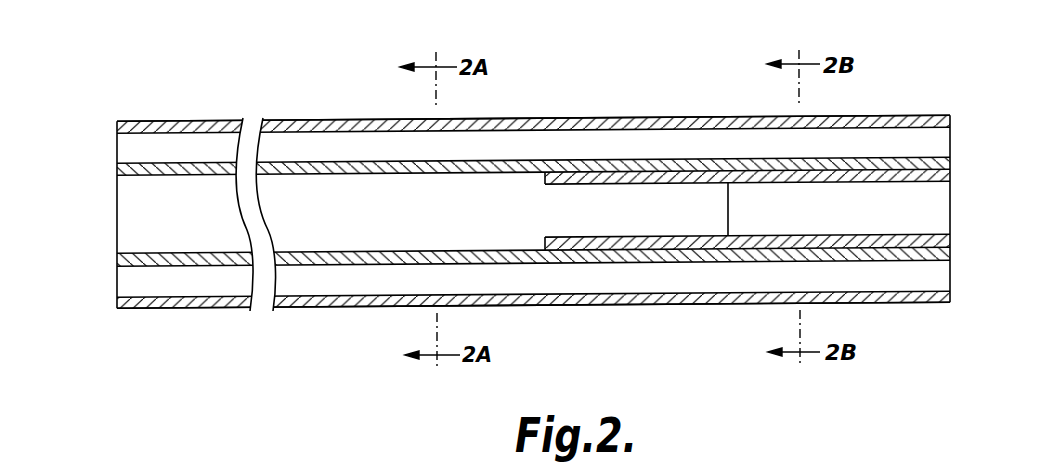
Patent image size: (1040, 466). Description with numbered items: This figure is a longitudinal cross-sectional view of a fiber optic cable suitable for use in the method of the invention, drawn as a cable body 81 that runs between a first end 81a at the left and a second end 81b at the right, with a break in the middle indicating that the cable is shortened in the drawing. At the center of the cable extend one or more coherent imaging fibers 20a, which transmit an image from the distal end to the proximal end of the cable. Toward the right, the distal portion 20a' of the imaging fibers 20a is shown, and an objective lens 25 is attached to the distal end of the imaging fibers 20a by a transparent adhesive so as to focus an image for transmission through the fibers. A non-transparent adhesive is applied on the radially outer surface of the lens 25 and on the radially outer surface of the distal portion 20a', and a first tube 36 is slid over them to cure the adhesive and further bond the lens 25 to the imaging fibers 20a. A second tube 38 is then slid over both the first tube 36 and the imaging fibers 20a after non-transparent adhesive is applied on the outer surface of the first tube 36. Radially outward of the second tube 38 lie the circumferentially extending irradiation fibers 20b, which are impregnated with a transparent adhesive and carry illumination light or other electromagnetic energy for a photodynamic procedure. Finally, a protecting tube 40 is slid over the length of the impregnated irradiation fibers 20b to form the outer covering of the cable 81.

The tubular catheter shaft 81 is at (513, 107).
The first (proximal) end of shaft 81a is at (117, 147).
The second (distal) end of shaft 81b is at (950, 142).
The protecting tube 40 is at (292, 306).
The second tube 38 is at (630, 257).
The first tube 36 is at (694, 242).
The imaging fibers 20a is at (331, 212).
The distal portion of the imaging fibers 20a' is at (636, 210).
The irradiation fibers 20b is at (400, 138).
The objective lens 25 is at (798, 218).